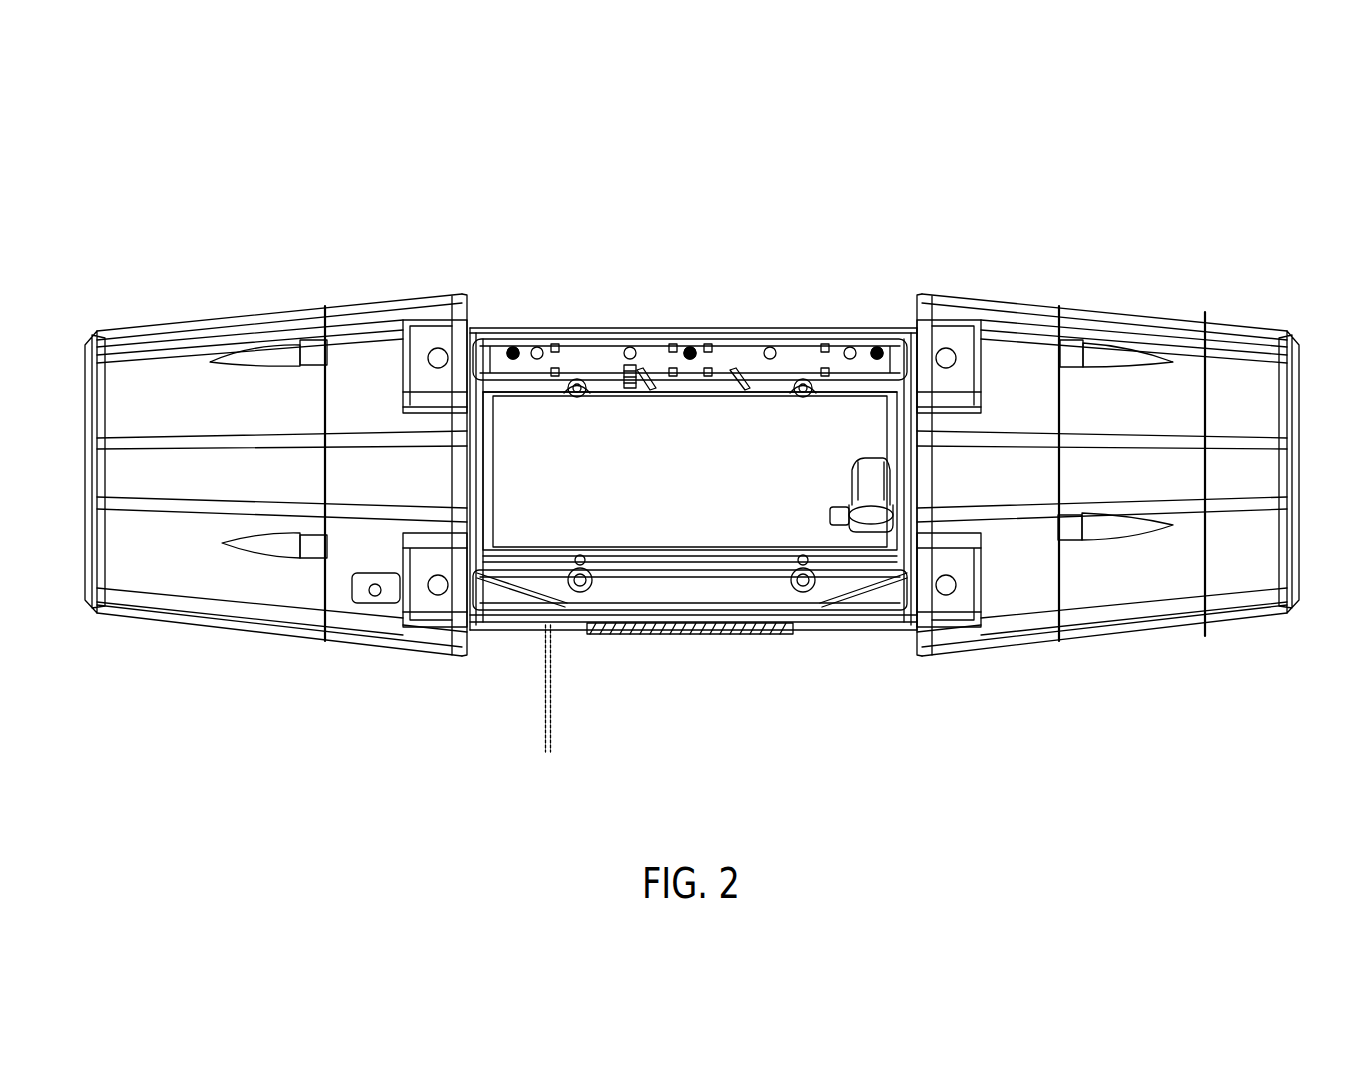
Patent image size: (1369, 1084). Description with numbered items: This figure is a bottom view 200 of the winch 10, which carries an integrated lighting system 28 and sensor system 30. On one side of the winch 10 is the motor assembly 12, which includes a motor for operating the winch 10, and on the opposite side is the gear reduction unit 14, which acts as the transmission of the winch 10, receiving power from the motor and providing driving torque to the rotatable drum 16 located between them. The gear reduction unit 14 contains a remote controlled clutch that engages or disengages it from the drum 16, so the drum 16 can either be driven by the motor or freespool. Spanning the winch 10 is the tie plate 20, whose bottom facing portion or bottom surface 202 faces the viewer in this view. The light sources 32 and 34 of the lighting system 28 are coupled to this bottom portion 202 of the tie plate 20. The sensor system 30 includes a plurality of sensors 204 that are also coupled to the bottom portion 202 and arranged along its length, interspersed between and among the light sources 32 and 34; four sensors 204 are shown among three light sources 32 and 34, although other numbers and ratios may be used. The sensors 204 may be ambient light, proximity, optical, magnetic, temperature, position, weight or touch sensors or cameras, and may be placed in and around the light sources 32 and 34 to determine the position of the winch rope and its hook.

The winch 10 is at (890, 186).
The motor assembly 12 is at (117, 388).
The gear reduction unit 14 is at (1285, 405).
The rotatable drum 16 is at (701, 481).
The tie plate 20 is at (862, 320).
The lighting system 28 is at (655, 411).
The sensor system 30 is at (654, 220).
The light source 32 is at (695, 518).
The light source 34 is at (513, 359).
The bottom view 200 is at (1228, 140).
The bottom portion 202 is at (498, 352).
The sensors 204 is at (850, 348).